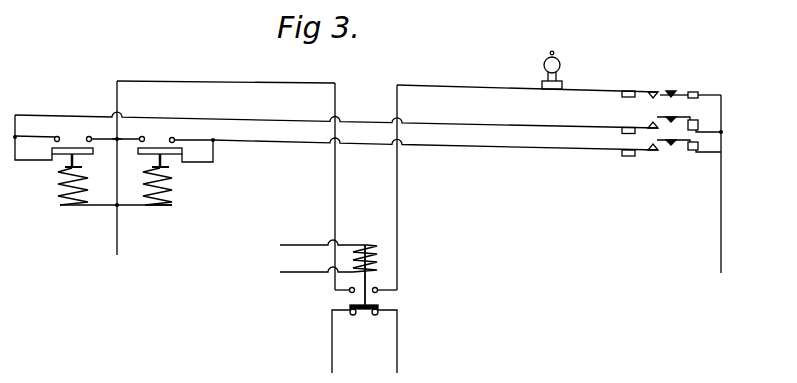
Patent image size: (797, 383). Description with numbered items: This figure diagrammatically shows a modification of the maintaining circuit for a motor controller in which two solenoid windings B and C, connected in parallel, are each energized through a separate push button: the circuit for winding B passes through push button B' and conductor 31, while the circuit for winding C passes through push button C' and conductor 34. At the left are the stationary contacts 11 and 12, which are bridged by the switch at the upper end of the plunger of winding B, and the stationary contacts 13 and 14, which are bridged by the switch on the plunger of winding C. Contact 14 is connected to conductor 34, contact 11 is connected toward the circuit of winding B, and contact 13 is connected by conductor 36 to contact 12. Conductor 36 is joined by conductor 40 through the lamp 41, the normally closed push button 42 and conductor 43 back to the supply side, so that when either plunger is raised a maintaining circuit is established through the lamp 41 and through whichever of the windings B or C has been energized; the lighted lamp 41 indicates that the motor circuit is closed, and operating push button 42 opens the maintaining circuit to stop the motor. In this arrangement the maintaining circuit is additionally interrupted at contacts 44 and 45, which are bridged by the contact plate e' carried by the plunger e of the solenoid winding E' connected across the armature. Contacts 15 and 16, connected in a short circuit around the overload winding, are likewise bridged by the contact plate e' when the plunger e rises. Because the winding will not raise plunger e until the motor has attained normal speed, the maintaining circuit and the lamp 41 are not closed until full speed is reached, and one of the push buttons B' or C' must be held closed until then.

The stationary contact 11 is at (57, 136).
The stationary contact 12 is at (92, 133).
The stationary contact 13 is at (143, 133).
The stationary contact 14 is at (173, 135).
The conductor 36 is at (125, 143).
The winding B is at (61, 176).
The winding C is at (166, 176).
The conductor 40 is at (250, 81).
The conductor 31 is at (466, 124).
The conductor 34 is at (470, 147).
The lamp 41 is at (561, 67).
The push button 42 is at (682, 84).
The push button B' is at (671, 115).
The push button C' is at (671, 158).
The conductor 43 is at (722, 131).
The relay magnet E' is at (352, 253).
The plunger e is at (376, 275).
The contact plate e' is at (364, 330).
The contact 45 is at (349, 292).
The contact 44 is at (379, 292).
The contact 15 is at (353, 315).
The contact 16 is at (376, 315).